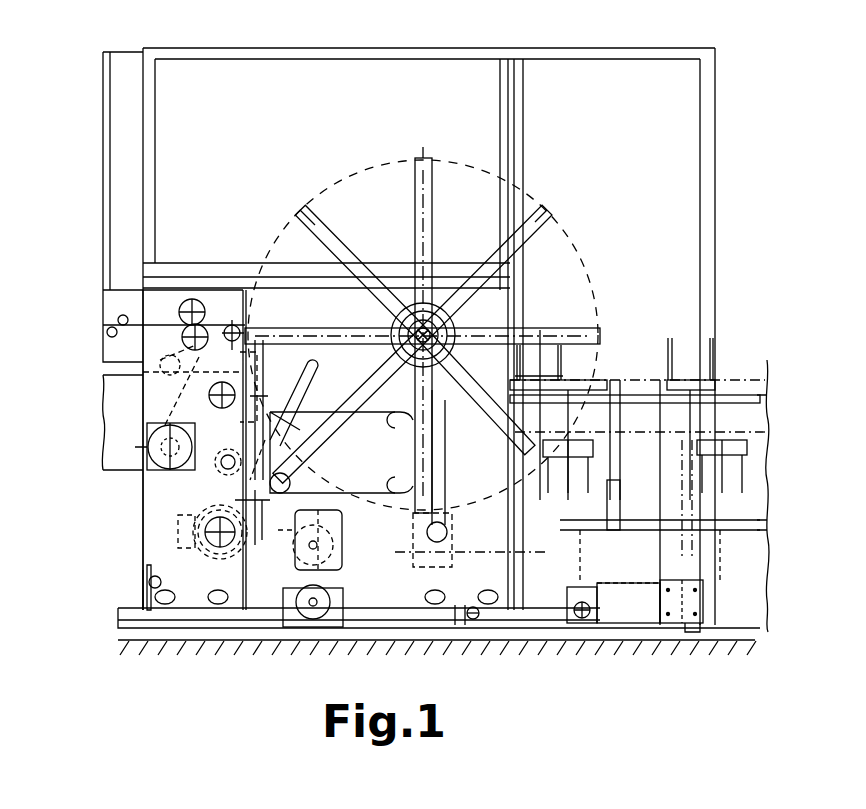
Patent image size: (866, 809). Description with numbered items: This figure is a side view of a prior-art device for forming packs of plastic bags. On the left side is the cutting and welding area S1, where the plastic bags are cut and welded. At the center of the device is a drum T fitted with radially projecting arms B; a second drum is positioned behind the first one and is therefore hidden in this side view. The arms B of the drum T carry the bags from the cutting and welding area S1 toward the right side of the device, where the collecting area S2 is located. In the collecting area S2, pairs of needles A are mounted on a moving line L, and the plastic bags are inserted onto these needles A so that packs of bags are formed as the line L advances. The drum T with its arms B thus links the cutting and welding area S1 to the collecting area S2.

The drum T is at (455, 265).
The arms B is at (300, 233).
The cutting and welding area S1 is at (250, 318).
The collecting area S2 is at (585, 366).
The pairs of needles A is at (525, 360).
The moving line L is at (775, 412).